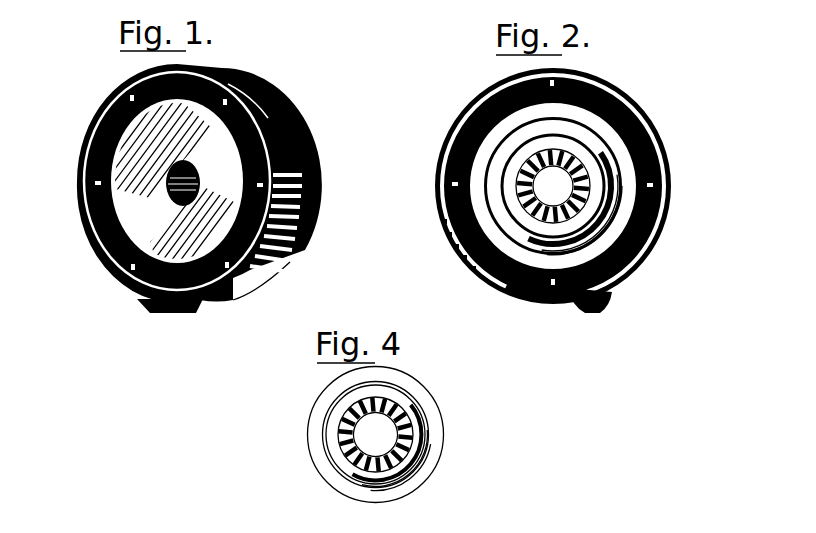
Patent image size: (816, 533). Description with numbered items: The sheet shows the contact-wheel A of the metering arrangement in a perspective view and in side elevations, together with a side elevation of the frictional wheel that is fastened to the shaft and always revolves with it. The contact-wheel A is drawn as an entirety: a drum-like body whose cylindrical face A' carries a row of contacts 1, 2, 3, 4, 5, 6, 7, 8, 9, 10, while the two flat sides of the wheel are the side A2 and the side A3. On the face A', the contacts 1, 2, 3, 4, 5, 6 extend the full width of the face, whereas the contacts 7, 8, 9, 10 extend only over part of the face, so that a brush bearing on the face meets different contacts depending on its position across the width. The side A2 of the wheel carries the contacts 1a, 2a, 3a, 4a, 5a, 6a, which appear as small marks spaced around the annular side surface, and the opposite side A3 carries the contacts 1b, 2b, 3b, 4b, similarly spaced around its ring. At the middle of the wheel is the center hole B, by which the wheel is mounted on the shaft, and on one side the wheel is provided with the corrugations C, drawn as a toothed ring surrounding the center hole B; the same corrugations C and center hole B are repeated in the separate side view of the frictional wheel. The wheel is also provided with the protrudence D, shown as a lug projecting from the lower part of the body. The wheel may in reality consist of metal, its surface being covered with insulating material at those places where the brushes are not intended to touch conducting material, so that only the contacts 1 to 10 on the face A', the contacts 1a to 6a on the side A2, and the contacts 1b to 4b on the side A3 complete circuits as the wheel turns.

In FIG. 1, the contact-wheel A is at (199, 168).
In FIG. 1, the face A' is at (292, 101).
In FIG. 1, the side A2 is at (95, 147).
In FIG. 2, the side A3 is at (450, 205).
In FIG. 1, the center hole B is at (172, 190).
In FIG. 2, the center hole B is at (565, 193).
In FIG. 4, the center hole B is at (370, 432).
In FIG. 2, the corrugations C is at (532, 200).
In FIG. 4, the corrugations C is at (400, 463).
In FIG. 1, the protrudence D is at (168, 313).
In FIG. 2, the protrudence D is at (600, 307).
In FIG. 1, the contact 1a is at (227, 267).
In FIG. 1, the contact 2a is at (320, 150).
In FIG. 1, the contact 3a is at (268, 80).
In FIG. 1, the contact 4a is at (127, 96).
In FIG. 1, the contact 5a is at (97, 185).
In FIG. 1, the contact 6a is at (133, 268).
In FIG. 2, the contact 1b is at (553, 285).
In FIG. 2, the contact 2b is at (455, 183).
In FIG. 2, the contact 3b is at (557, 82).
In FIG. 2, the contact 4b is at (655, 186).
In FIG. 1, the contact 1 is at (267, 283).
In FIG. 2, the contact 1 is at (502, 290).
In FIG. 1, the contact 2 is at (288, 261).
In FIG. 2, the contact 2 is at (475, 272).
In FIG. 1, the contact 3 is at (292, 250).
In FIG. 2, the contact 3 is at (467, 260).
In FIG. 1, the contact 4 is at (295, 239).
In FIG. 2, the contact 4 is at (458, 248).
In FIG. 1, the contact 5 is at (297, 228).
In FIG. 2, the contact 5 is at (450, 236).
In FIG. 1, the contact 6 is at (299, 217).
In FIG. 2, the contact 6 is at (443, 224).
In FIG. 1, the contact 7 is at (300, 207).
In FIG. 1, the contact 8 is at (301, 196).
In FIG. 1, the contact 9 is at (302, 186).
In FIG. 1, the contact 10 is at (302, 175).